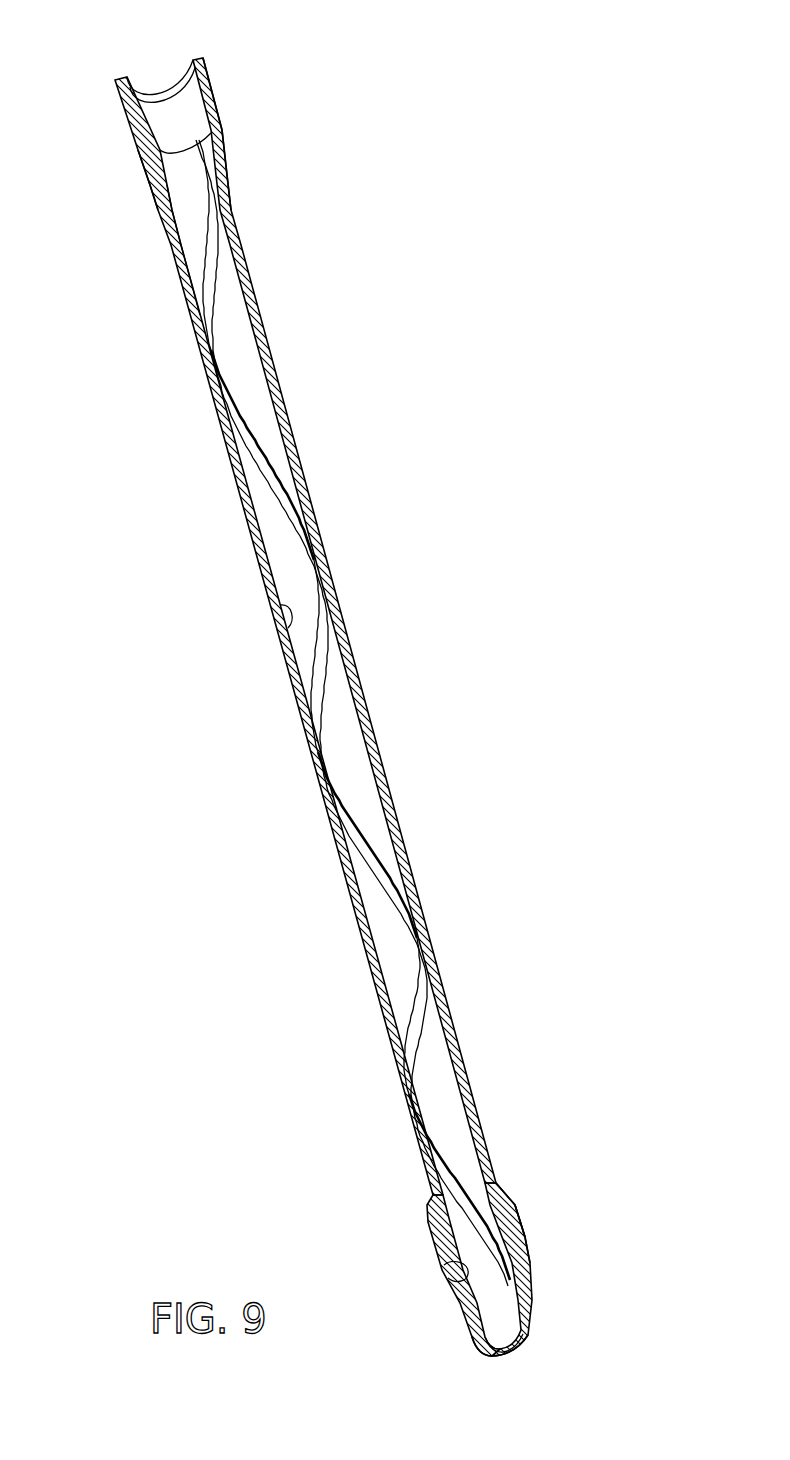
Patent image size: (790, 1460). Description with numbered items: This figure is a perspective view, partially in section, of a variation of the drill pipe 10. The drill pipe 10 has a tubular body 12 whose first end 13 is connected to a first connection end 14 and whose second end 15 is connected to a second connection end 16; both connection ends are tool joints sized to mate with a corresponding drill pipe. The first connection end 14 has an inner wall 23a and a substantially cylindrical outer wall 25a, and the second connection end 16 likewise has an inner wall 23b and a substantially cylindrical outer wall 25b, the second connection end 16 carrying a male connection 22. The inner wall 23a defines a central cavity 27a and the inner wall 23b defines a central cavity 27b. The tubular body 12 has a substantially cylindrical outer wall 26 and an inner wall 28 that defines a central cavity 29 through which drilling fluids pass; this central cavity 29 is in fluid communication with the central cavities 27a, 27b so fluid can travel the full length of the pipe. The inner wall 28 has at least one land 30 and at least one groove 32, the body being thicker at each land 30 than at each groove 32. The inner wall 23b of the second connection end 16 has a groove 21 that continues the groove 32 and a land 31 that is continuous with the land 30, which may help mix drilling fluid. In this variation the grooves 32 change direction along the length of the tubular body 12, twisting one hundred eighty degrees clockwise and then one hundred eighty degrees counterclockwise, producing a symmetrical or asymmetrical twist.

The drill pipe 10 is at (483, 104).
The tubular body 12 is at (340, 622).
The first end 13 is at (222, 175).
The first connection end 14 is at (140, 130).
The second end 15 is at (497, 1180).
The second connection end 16 is at (530, 1258).
The groove 21 is at (472, 1233).
The male connection 22 is at (533, 1322).
The inner wall 23a is at (156, 96).
The inner wall 23b is at (466, 1279).
The outer wall 25a is at (215, 90).
The outer wall 25b is at (518, 1222).
The outer wall 26 is at (237, 467).
The central cavity 27a is at (178, 117).
The central cavity 27b is at (497, 1341).
The inner wall 28 is at (285, 632).
The central cavity 29 is at (345, 738).
The land 30 is at (182, 205).
The land 31 is at (486, 1303).
The groove 32 is at (212, 263).